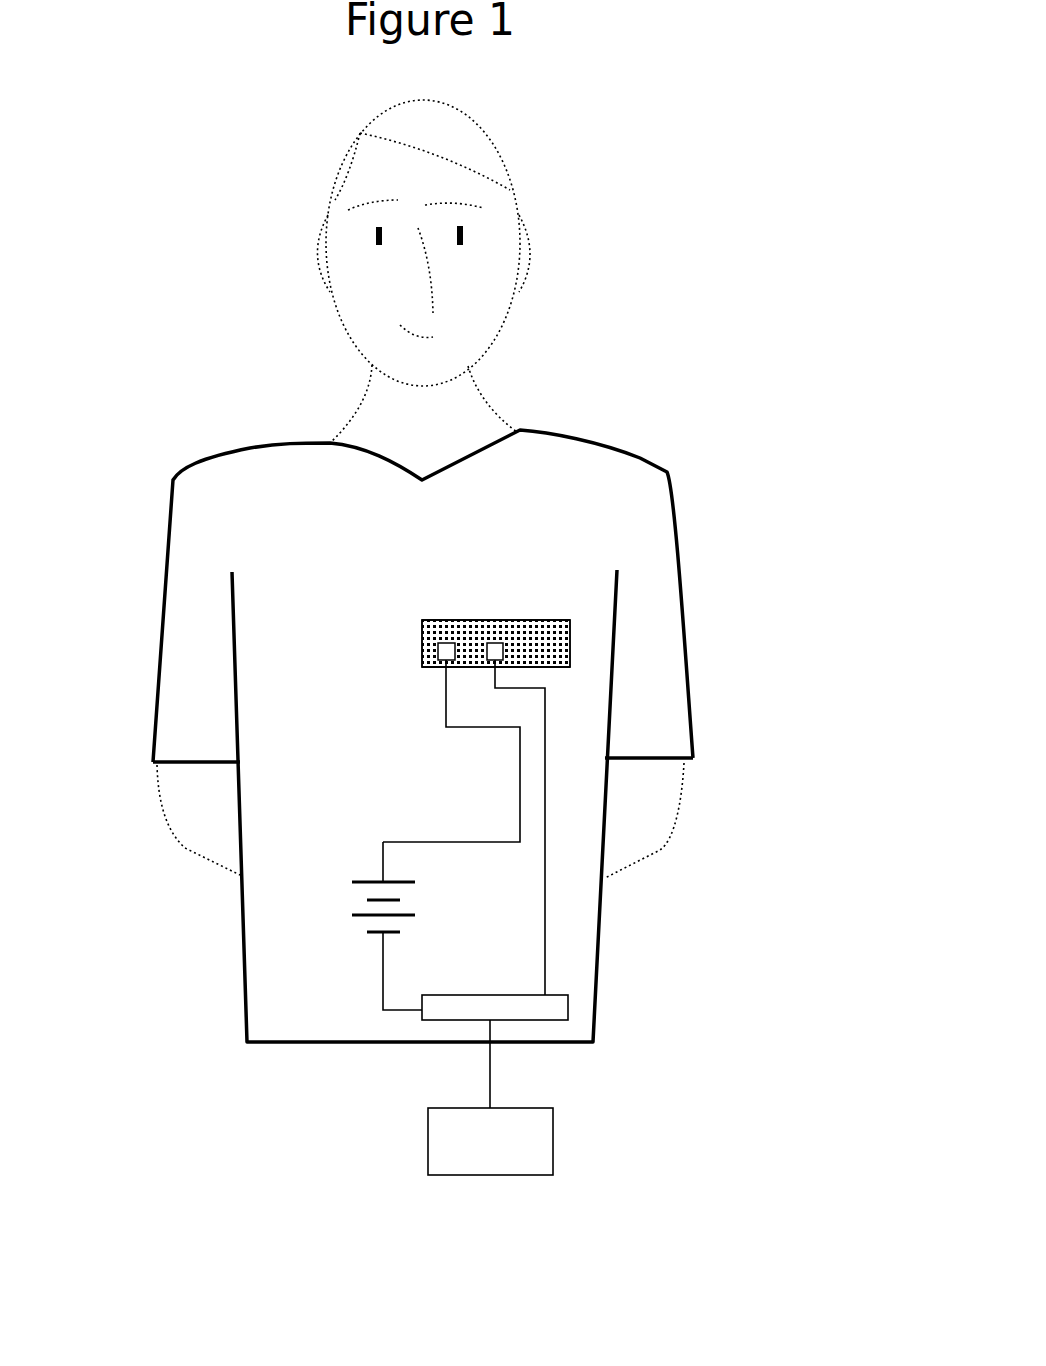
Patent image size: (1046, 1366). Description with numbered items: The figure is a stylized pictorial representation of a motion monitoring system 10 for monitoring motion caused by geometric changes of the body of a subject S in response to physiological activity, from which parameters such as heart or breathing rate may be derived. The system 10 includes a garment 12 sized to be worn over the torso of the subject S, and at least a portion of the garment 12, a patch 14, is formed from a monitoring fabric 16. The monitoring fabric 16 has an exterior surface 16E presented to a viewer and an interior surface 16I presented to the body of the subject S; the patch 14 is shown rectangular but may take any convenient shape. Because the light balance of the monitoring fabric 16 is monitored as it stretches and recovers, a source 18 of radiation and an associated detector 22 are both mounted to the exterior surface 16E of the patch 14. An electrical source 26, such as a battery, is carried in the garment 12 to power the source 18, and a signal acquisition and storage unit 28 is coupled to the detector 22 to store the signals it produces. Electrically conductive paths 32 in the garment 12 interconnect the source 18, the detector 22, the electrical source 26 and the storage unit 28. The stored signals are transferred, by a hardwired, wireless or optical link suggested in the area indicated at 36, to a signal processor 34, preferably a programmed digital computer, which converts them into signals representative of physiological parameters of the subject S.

The motion monitoring system 10 is at (225, 430).
The garment 12 is at (578, 470).
The patch 14 is at (461, 612).
The monitoring fabric 16 is at (525, 620).
The exterior surface 16E is at (538, 637).
The interior surface 16I is at (570, 638).
The source of radiation 18 is at (490, 650).
The detector 22 is at (442, 648).
The electrical source 26 is at (355, 923).
The signal acquisition and storage unit 28 is at (557, 1008).
The electrically conductive paths 32 is at (547, 958).
The signal processor 34 is at (460, 1160).
The transmission link 36 is at (490, 1058).
The subject S is at (473, 430).